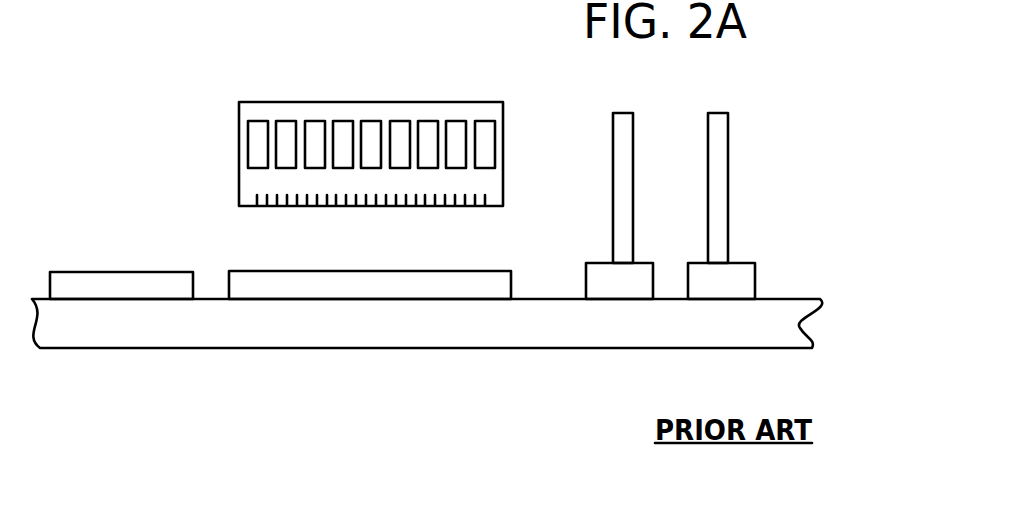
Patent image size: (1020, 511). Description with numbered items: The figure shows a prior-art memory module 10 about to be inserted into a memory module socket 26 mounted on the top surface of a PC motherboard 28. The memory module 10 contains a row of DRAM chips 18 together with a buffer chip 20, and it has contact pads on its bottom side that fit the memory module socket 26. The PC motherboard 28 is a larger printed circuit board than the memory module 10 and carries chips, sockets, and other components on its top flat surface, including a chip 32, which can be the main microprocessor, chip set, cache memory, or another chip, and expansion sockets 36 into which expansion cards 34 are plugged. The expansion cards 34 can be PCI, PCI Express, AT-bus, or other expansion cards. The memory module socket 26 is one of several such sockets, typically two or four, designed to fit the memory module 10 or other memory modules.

The memory module 10 is at (345, 129).
The DRAM chips 18 is at (342, 129).
The buffer chip 20 is at (373, 132).
The memory module socket 26 is at (511, 271).
The PC motherboard 28 is at (600, 333).
The chip 32 is at (83, 272).
The expansion cards 34 is at (708, 143).
The expansion sockets 36 is at (688, 262).